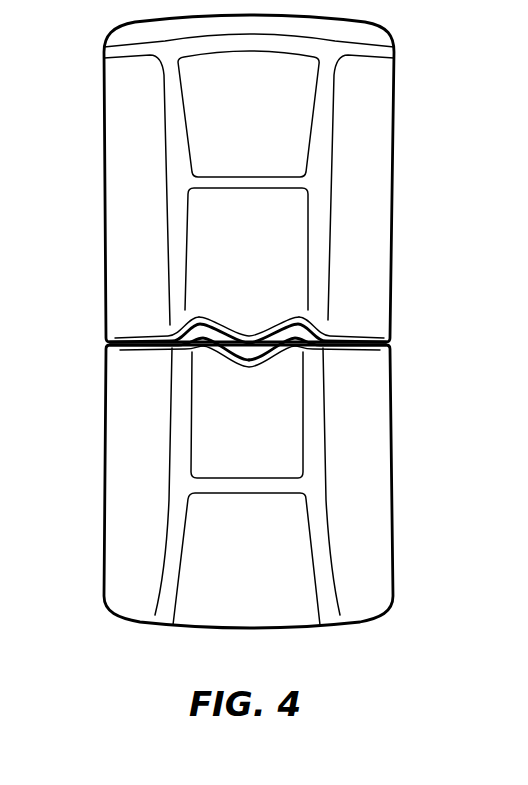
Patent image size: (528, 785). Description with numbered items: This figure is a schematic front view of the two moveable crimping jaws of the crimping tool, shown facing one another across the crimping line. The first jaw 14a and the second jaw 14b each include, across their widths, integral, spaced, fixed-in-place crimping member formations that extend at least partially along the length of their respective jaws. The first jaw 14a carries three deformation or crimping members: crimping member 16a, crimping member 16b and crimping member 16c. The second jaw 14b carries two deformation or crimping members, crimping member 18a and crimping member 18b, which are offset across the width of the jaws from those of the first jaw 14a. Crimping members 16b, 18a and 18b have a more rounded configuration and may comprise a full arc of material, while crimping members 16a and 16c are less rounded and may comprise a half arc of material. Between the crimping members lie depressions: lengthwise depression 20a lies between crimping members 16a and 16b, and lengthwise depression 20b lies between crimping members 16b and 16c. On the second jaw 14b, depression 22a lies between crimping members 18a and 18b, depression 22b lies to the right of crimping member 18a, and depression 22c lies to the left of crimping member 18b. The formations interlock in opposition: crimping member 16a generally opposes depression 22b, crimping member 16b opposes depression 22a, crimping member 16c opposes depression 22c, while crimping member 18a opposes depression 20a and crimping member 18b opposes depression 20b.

The first jaw 14a is at (390, 317).
The second jaw 14b is at (390, 375).
The crimping member 16a is at (316, 332).
The crimping member 16b is at (248, 332).
The crimping member 16c is at (175, 336).
The crimping member 18a is at (301, 348).
The crimping member 18b is at (175, 346).
The lengthwise depression 20a is at (295, 318).
The lengthwise depression 20b is at (202, 318).
The depression 22a is at (248, 363).
The depression 22b is at (312, 350).
The depression 22c is at (175, 349).